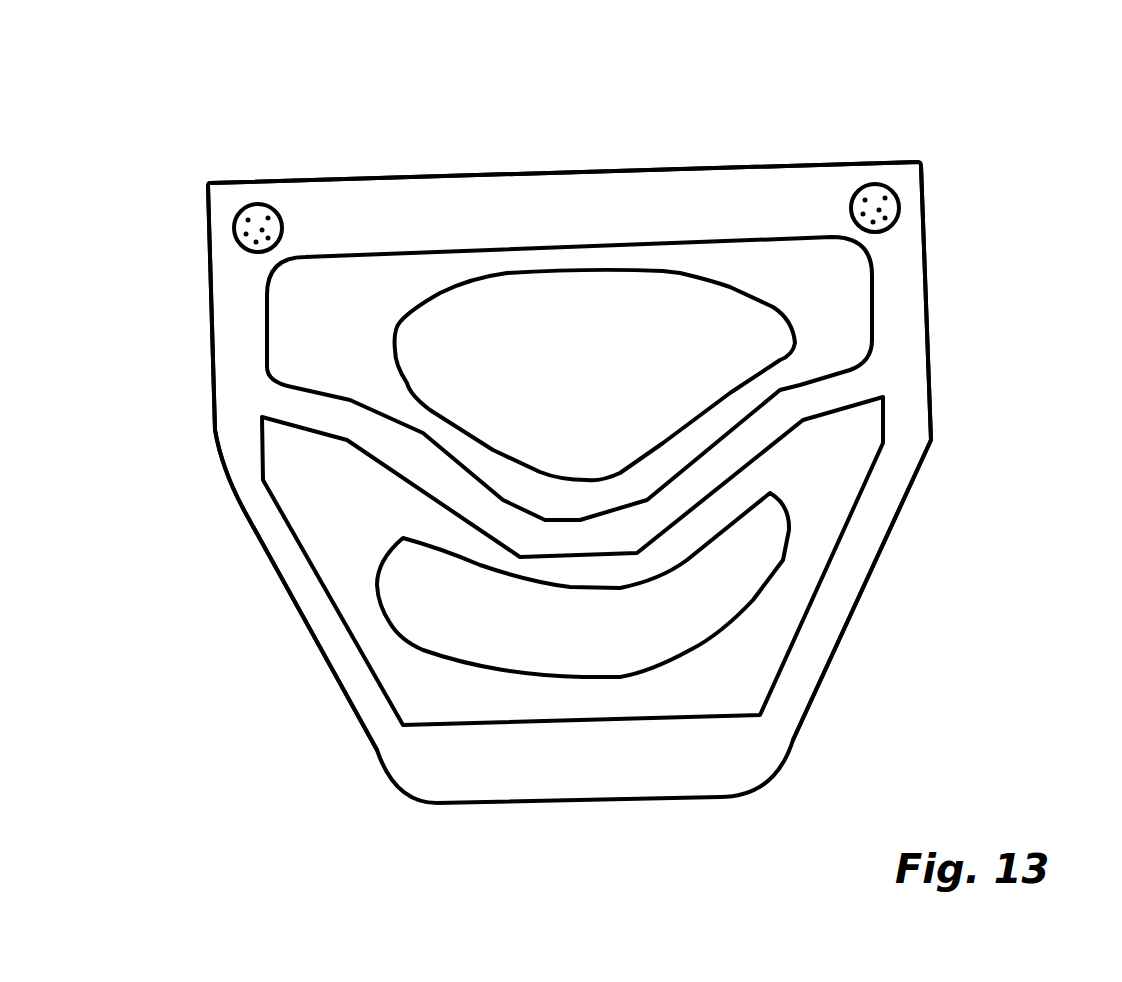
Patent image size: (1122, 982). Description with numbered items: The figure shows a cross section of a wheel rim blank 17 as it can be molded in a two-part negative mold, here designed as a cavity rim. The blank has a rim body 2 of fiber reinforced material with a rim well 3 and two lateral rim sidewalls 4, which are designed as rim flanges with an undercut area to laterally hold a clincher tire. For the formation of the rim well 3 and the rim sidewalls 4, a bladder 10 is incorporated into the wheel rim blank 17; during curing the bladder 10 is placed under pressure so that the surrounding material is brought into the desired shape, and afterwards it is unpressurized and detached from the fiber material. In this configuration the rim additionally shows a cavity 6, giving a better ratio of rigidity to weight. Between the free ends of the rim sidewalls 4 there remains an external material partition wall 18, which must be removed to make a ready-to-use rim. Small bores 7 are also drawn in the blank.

The rim body 2 is at (366, 763).
The rim well 3 is at (490, 719).
The rim sidewalls 4 is at (222, 312).
The cavity 6 is at (367, 543).
The fastening hole 7 is at (260, 227).
The bladder 10 is at (773, 300).
The wheel rim blank 17 is at (1015, 164).
The external material partition wall 18 is at (450, 190).